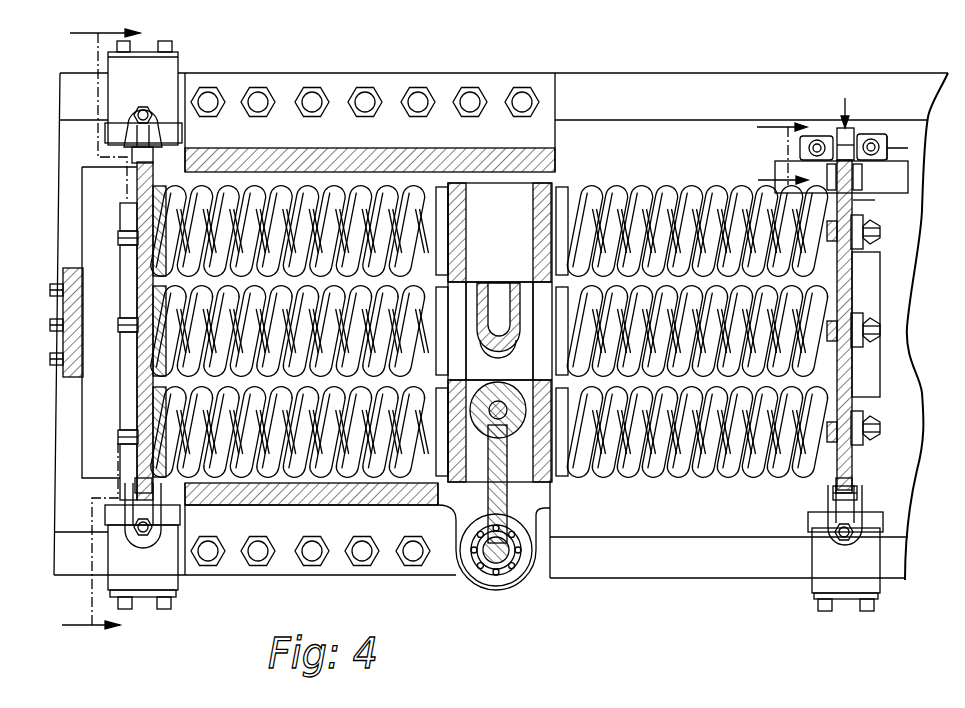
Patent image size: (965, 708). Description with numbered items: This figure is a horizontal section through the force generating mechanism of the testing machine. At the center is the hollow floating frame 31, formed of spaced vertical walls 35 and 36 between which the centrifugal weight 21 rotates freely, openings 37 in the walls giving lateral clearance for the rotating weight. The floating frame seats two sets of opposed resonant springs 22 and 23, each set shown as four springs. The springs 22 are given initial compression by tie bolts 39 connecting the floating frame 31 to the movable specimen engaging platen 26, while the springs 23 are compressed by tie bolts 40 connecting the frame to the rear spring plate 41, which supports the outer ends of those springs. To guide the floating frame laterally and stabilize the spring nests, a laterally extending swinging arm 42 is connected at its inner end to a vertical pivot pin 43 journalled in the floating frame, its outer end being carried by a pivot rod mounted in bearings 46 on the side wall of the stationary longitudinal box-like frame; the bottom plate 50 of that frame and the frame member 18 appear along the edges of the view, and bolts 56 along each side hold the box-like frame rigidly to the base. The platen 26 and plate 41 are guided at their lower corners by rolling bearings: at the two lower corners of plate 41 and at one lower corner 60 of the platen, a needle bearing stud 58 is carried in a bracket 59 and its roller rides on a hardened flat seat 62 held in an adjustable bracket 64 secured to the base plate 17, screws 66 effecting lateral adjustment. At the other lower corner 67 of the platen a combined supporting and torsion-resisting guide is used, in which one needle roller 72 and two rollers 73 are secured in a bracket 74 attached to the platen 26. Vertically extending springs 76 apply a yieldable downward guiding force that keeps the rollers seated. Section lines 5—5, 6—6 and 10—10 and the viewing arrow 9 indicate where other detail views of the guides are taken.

The section line 5 is at (91, 545).
The section line 6 is at (105, 107).
The view direction arrow 9 is at (845, 103).
The section line 10— 10 is at (783, 154).
The base plate 17 is at (791, 76).
The frame member 18 is at (597, 100).
The centrifugal weight 21 is at (511, 283).
The resonant springs 22 is at (673, 188).
The resonant springs 23 is at (364, 180).
The specimen engaging platen 26 is at (852, 470).
The floating frame 31 is at (550, 183).
The vertical wall 35 is at (470, 218).
The vertical wall 36 is at (535, 253).
The openings 37 is at (528, 374).
The tie bolts 39 is at (880, 228).
The tie bolts 40 is at (118, 237).
The rear spring plate 41 is at (137, 182).
The swinging arm 42 is at (488, 496).
The vertical pivot pin 43 is at (508, 420).
The bearings 46 is at (522, 545).
The bottom plate 50 is at (545, 578).
The bolts 56 is at (366, 95).
The stud 58 is at (150, 98).
The bracket 59 is at (158, 156).
The lower corner of platen 60 is at (835, 494).
The flat seat 62 is at (110, 130).
The adjustable bracket 64 is at (116, 103).
The screws 66 is at (166, 42).
The other lower corner of platen 67 is at (862, 201).
The needle type roller 72 is at (862, 180).
The rollers 73 is at (822, 137).
The bracket 74 is at (888, 156).
The springs 76 is at (120, 272).